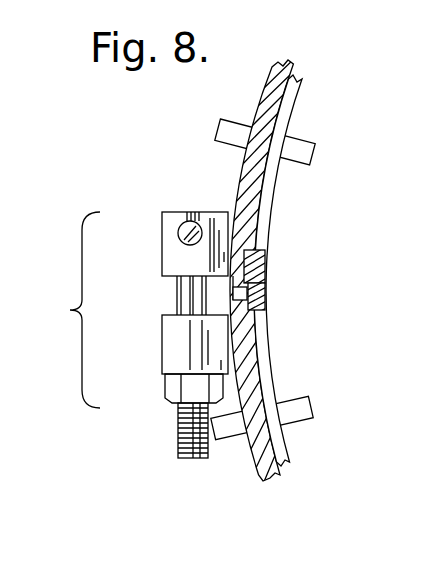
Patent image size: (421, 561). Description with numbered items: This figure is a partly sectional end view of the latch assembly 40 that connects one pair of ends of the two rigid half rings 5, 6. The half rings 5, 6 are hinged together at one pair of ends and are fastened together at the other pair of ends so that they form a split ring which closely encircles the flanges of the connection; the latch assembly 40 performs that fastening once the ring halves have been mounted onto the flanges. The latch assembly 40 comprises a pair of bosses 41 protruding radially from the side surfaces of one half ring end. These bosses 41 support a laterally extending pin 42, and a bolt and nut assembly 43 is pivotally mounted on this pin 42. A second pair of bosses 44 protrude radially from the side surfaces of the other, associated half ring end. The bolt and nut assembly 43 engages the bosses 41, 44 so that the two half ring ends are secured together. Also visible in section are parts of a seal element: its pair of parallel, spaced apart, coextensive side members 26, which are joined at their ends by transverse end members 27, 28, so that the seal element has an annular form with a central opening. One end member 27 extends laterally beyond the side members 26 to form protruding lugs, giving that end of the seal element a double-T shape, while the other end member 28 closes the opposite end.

The half ring 5 is at (237, 192).
The half ring 6 is at (266, 271).
The side members 26 is at (287, 125).
The end member 27 is at (267, 262).
The end member 28 is at (267, 296).
The latch assembly 40 is at (138, 316).
The bosses 41 is at (162, 268).
The pin 42 is at (188, 221).
The bolt and nut assembly 43 is at (178, 420).
The bosses 44 is at (162, 340).